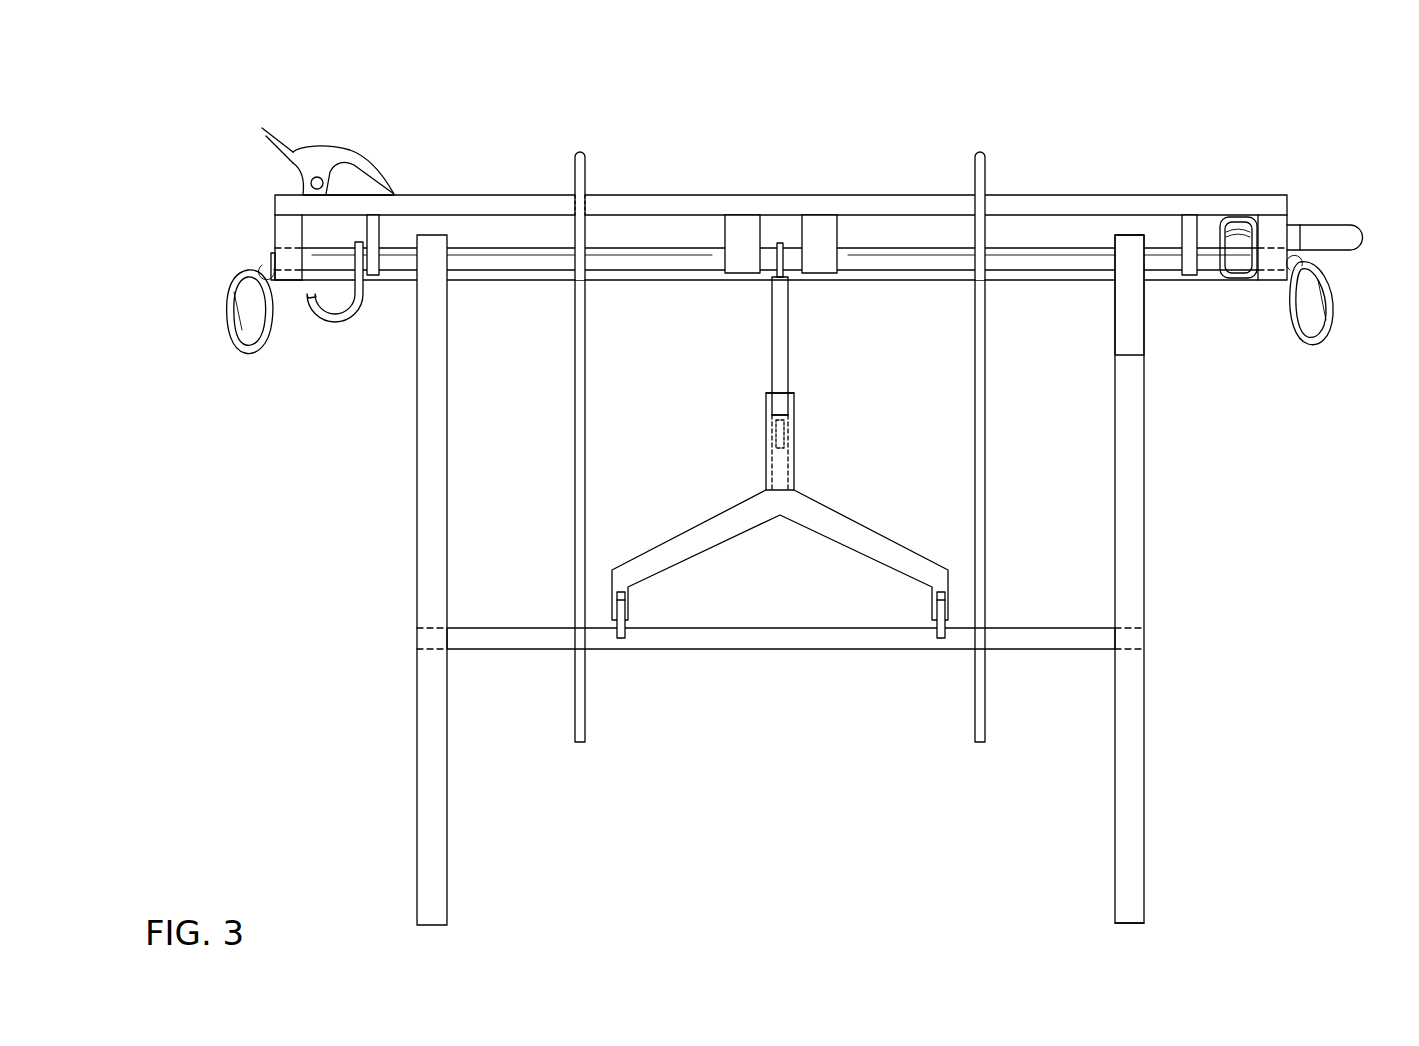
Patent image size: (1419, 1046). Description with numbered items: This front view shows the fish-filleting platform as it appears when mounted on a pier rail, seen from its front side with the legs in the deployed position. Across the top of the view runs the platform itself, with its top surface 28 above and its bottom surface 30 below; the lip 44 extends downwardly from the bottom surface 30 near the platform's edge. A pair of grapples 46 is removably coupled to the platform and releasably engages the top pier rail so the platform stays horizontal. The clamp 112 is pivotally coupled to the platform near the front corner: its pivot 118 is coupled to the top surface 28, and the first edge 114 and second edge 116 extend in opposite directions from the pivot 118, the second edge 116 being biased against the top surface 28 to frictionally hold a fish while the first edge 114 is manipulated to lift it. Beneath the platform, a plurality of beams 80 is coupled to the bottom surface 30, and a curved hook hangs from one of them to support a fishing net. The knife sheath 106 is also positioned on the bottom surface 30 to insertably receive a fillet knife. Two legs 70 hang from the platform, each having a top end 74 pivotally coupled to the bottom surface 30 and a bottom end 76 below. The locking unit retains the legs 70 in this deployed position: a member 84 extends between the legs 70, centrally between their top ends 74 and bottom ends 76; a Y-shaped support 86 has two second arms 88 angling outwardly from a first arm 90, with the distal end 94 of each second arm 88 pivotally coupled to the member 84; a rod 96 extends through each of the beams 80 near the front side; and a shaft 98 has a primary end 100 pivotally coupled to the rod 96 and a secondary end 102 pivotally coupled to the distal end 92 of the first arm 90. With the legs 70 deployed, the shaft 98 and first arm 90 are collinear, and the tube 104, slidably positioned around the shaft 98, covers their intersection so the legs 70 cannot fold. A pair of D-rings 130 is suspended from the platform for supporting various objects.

The top surface 28 is at (494, 194).
The bottom surface 30 is at (478, 215).
The lip 44 is at (288, 281).
The grapples 46 is at (586, 172).
The legs 70 is at (417, 505).
The top end 74 is at (1129, 236).
The bottom end 76 is at (1127, 923).
The beams 80 is at (377, 238).
The member 84 is at (1030, 650).
The support 86 is at (780, 621).
The second arms 88 is at (688, 533).
The first arm 90 is at (767, 477).
The distal end 92 is at (796, 395).
The distal end 94 is at (620, 638).
The rod 96 is at (1036, 247).
The shaft 98 is at (772, 330).
The primary end 100 is at (786, 272).
The secondary end 102 is at (777, 423).
The tube 104 is at (795, 448).
The knife sheath 106 is at (1238, 222).
The clamp 112 is at (270, 158).
The first edge 114 is at (262, 128).
The second edge 116 is at (390, 197).
The pivot 118 is at (310, 183).
The D-rings 130 is at (230, 330).